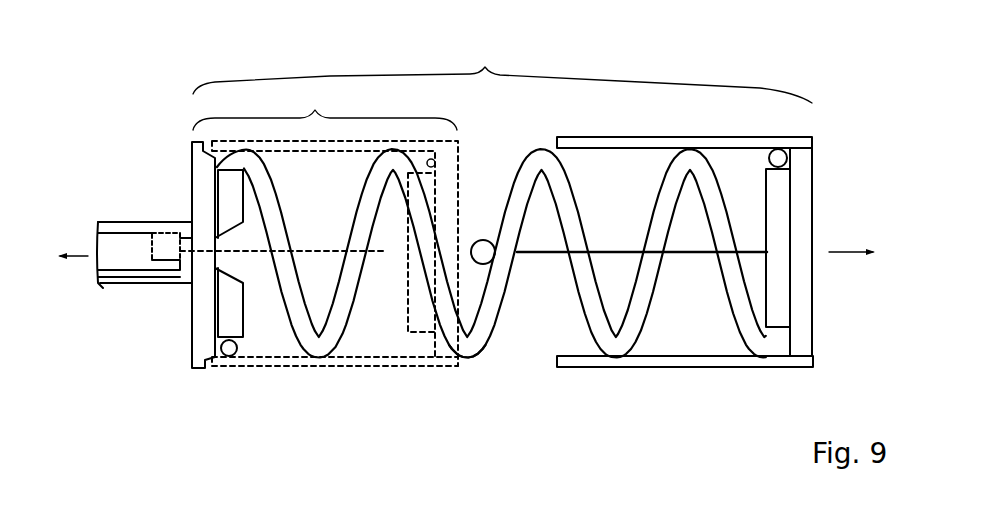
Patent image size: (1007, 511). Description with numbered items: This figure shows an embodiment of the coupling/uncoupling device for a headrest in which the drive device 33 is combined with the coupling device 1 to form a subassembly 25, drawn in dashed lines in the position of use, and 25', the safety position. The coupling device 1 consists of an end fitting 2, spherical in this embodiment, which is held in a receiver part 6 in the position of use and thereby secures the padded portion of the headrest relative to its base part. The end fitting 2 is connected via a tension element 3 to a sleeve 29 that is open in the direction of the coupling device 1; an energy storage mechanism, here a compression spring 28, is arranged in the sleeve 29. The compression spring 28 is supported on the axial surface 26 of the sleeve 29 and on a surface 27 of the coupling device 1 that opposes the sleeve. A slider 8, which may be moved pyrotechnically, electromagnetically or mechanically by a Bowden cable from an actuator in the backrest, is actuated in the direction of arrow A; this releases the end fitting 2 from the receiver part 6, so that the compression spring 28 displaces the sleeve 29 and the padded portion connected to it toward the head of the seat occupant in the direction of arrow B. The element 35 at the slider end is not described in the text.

The coupling device 1 is at (117, 189).
The end fitting 2 is at (163, 250).
The tension element 3 is at (385, 251).
The receiver part 6 is at (169, 207).
The slider 8 is at (130, 258).
The subassembly 25 is at (325, 106).
The subassembly 25' is at (496, 147).
The axial surface 26 is at (436, 156).
The surface 27 is at (221, 358).
The compression spring 28 is at (471, 350).
The sleeve 29 is at (293, 367).
The drive device 33 is at (401, 384).
The cylinder end 35 is at (110, 283).
The arrow A is at (73, 244).
The arrow B is at (852, 239).